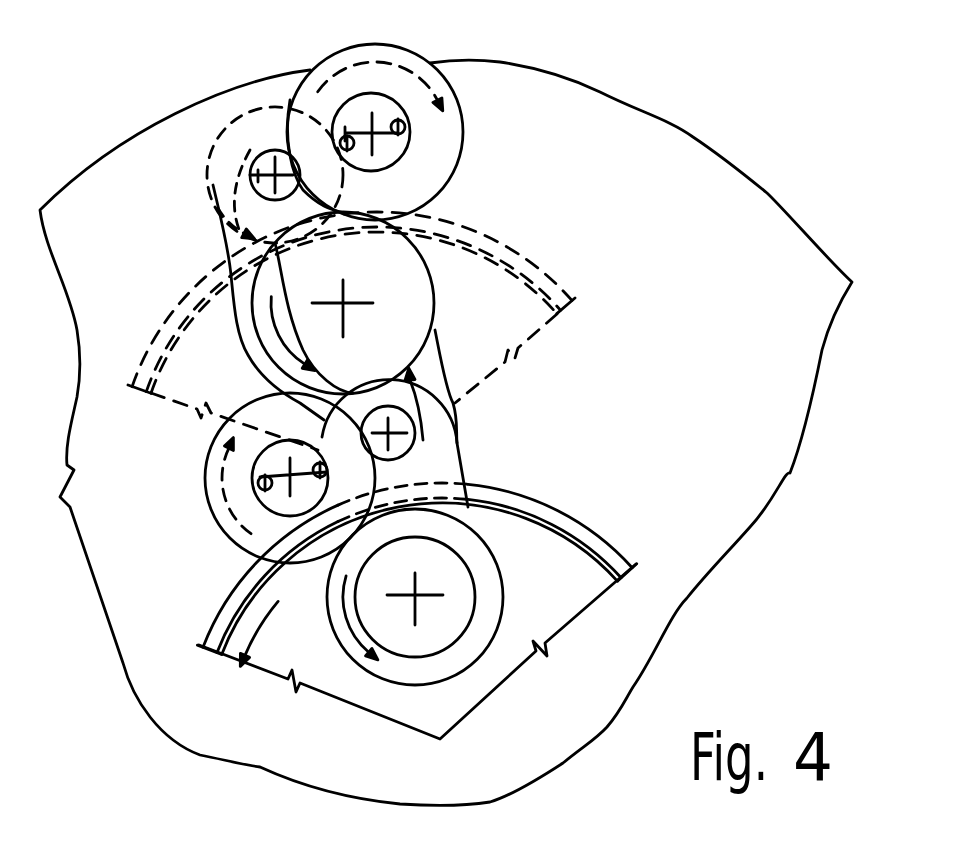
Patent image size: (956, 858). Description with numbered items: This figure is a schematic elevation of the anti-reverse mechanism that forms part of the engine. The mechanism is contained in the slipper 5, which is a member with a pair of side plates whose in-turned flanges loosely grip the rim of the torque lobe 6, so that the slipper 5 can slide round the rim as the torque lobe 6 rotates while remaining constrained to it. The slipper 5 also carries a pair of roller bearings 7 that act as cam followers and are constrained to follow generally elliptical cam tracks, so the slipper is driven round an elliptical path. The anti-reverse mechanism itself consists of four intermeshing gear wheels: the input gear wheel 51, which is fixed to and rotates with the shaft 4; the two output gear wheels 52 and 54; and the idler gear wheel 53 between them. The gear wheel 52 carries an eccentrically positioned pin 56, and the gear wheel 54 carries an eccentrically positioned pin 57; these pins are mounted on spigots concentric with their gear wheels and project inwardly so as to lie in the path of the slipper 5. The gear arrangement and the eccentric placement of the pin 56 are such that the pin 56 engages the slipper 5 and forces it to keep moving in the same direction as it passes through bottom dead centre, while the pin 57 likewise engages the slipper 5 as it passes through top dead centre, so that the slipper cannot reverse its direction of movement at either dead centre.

The shaft 4 is at (473, 575).
The slipper 5 is at (243, 117).
The torque lobe 6 is at (592, 532).
The roller bearings 7 is at (440, 440).
The input gear wheel 51 is at (480, 672).
The output gear wheel 52 is at (222, 520).
The idler gear wheel 53 is at (423, 272).
The output gear wheel 54 is at (420, 53).
The eccentrically-positioned pin 56 is at (253, 478).
The eccentrically-positioned pin 57 is at (405, 122).